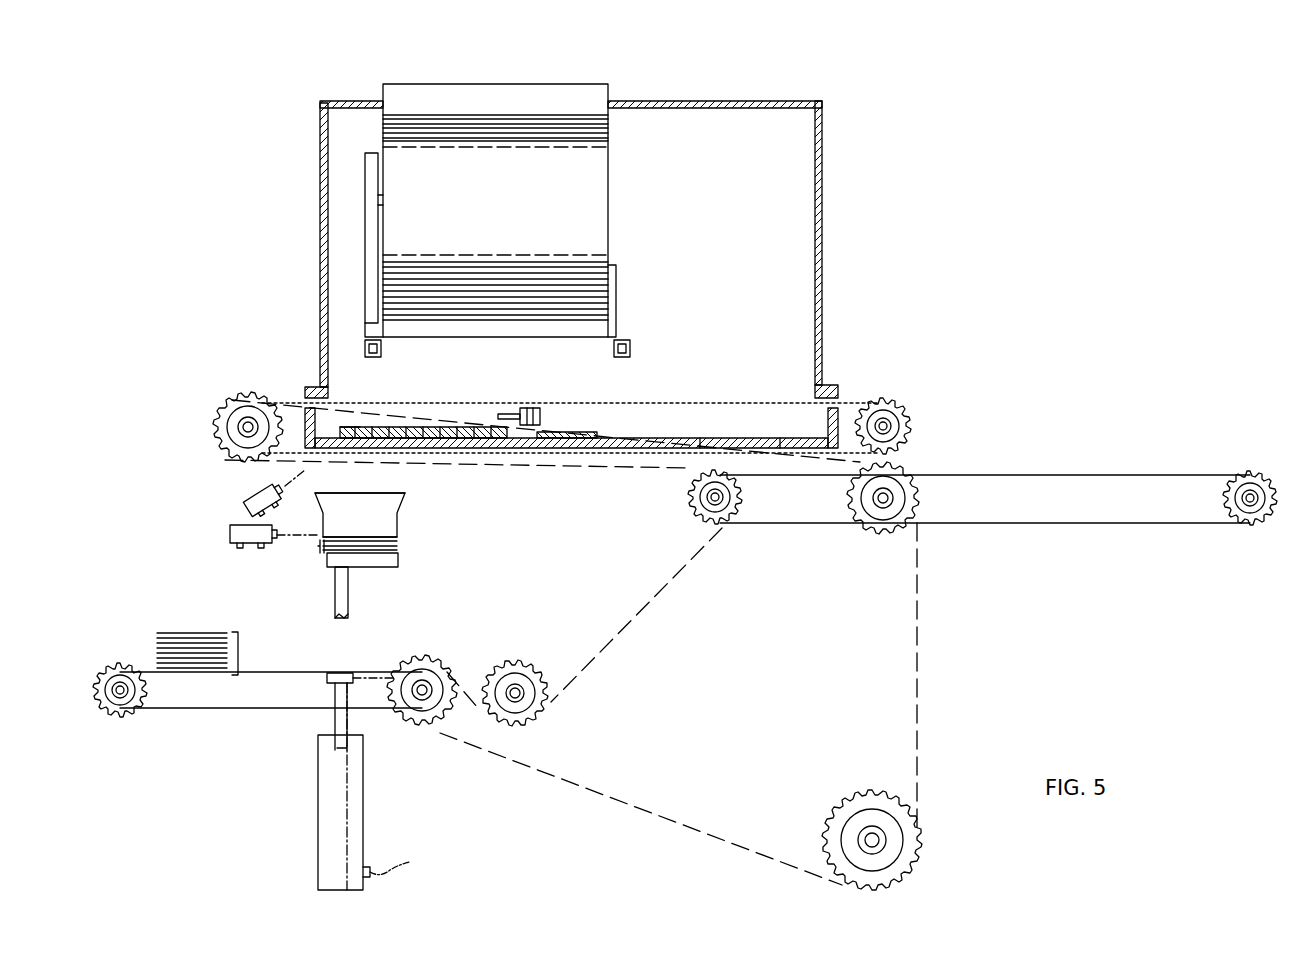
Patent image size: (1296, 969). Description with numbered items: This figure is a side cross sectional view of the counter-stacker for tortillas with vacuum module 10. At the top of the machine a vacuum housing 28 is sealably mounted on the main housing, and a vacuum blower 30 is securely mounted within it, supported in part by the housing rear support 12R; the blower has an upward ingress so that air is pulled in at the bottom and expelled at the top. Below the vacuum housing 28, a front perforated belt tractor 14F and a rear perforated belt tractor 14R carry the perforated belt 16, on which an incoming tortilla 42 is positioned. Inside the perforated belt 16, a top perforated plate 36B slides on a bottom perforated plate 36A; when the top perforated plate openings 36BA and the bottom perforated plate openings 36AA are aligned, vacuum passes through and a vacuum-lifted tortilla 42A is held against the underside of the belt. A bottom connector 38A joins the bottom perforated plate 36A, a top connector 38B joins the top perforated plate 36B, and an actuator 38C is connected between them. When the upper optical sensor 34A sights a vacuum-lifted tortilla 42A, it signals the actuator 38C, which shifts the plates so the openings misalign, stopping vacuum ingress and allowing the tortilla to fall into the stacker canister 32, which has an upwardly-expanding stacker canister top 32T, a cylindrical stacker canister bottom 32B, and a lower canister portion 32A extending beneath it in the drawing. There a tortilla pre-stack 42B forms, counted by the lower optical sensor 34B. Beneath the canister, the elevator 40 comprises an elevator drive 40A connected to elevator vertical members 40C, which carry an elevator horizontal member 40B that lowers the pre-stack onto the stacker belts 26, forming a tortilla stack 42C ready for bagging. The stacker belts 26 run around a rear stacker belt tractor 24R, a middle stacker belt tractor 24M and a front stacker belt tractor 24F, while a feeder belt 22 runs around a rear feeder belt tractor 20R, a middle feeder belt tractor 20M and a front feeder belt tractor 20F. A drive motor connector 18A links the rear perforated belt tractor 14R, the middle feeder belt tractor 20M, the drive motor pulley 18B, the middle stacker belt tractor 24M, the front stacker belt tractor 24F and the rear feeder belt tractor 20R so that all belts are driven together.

The counter-stacker for tortillas with vacuum module 10 is at (518, 66).
The housing rear support 12R is at (381, 348).
The rear perforated belt tractor 14R is at (252, 422).
The front perforated belt tractor 14F is at (885, 424).
The perforated belt 16 is at (728, 410).
The drive motor connector 18A is at (682, 568).
The drive motor pulley 18B is at (876, 842).
The rear feeder belt tractor 20R is at (712, 500).
The middle feeder belt tractor 20M is at (886, 498).
The front feeder belt tractor 20F is at (1250, 500).
The feeder belt 22 is at (1089, 508).
The rear stacker belt tractor 24R is at (122, 688).
The middle stacker belt tractor 24M is at (424, 688).
The front stacker belt tractor 24F is at (518, 694).
The stacker belts 26 is at (260, 672).
The vacuum housing 28 is at (822, 104).
The vacuum blower 30 is at (600, 94).
The stacker canister 32 is at (407, 554).
The stacker canister top 32T is at (405, 494).
The hopper stem 32A is at (348, 596).
The stacker canister bottom 32B is at (398, 550).
The upper optical sensor 34A is at (236, 504).
The lower optical sensor 34B is at (230, 534).
The bottom perforated plate 36A is at (710, 437).
The bottom perforated plate openings 36AA is at (793, 437).
The top perforated plate 36B is at (382, 427).
The top perforated plate openings 36BA is at (368, 430).
The bottom connector 38A is at (538, 422).
The top connector 38B is at (508, 414).
The actuator 38C is at (530, 408).
The elevator 40 is at (336, 763).
The elevator drive 40A is at (320, 792).
The elevator horizontal member 40B is at (352, 650).
The elevator vertical members 40C is at (332, 738).
The incoming tortilla 42 is at (990, 495).
The vacuum-lifted tortilla 42A is at (397, 464).
The tortilla pre-stack 42B is at (318, 548).
The tortilla stack 42C is at (234, 642).